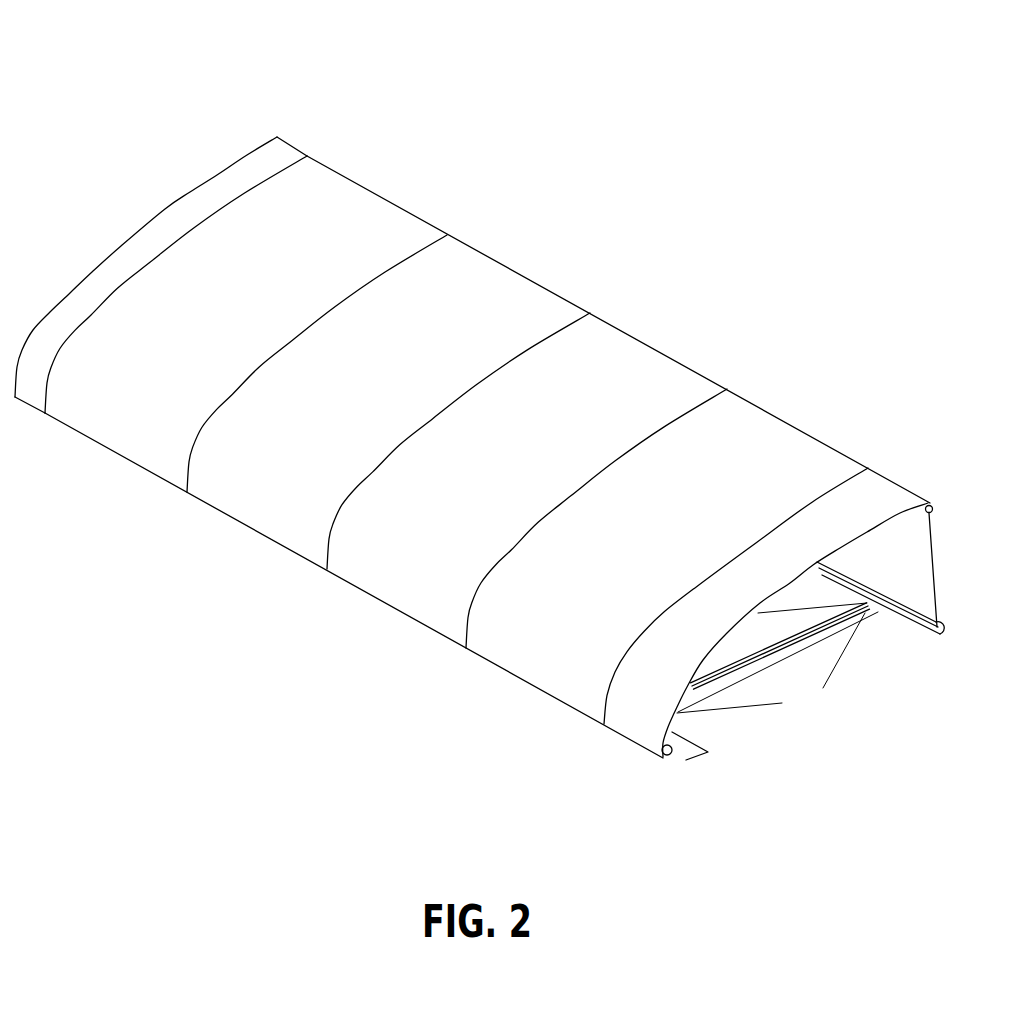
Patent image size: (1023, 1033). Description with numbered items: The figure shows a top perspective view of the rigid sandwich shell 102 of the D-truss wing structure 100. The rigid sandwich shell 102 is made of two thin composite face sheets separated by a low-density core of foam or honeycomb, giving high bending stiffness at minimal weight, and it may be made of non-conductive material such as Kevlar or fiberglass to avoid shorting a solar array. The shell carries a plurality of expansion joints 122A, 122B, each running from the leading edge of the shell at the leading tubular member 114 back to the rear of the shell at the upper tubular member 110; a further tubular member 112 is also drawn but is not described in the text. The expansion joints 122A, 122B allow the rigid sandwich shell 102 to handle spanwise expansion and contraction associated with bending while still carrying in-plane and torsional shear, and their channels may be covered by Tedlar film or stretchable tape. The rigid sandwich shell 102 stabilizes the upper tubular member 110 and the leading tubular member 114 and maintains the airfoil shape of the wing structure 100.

The wing structure 100 is at (855, 203).
The rigid sandwich shell 102 is at (472, 322).
The upper tubular member 110 is at (937, 513).
The rail 112 is at (947, 633).
The leading tubular member 114 is at (663, 760).
The expansion joint 122A is at (208, 217).
The expansion joint 122B is at (277, 347).